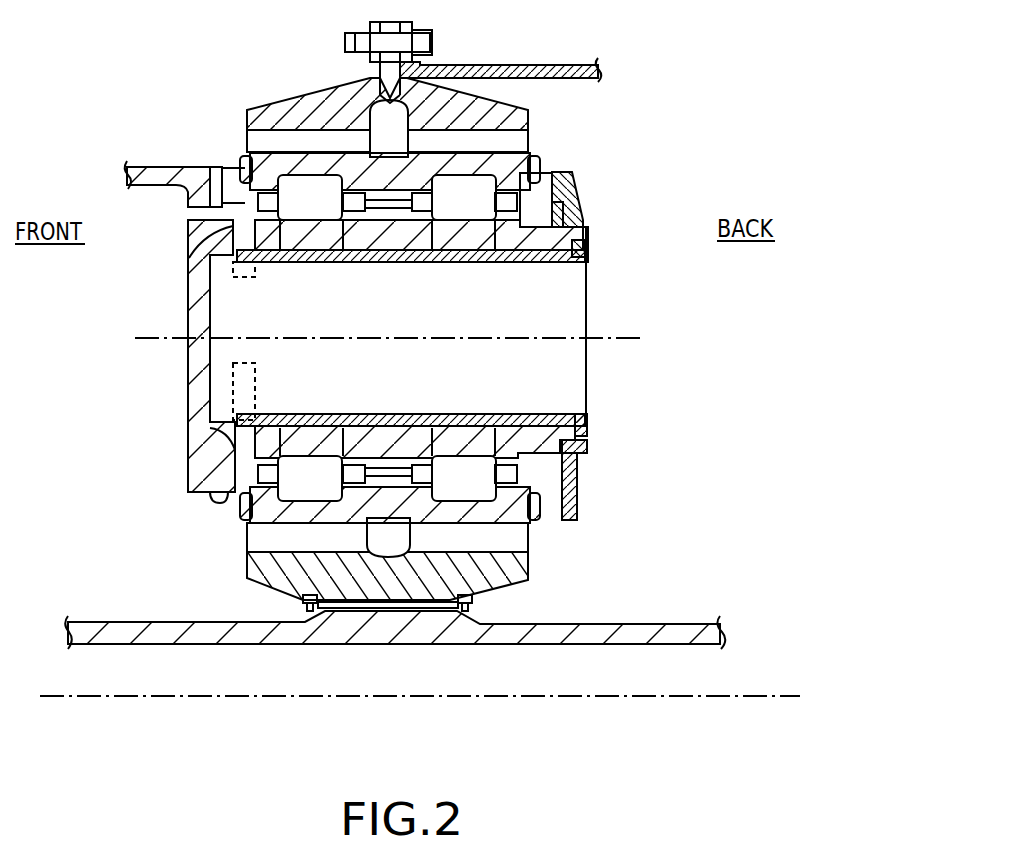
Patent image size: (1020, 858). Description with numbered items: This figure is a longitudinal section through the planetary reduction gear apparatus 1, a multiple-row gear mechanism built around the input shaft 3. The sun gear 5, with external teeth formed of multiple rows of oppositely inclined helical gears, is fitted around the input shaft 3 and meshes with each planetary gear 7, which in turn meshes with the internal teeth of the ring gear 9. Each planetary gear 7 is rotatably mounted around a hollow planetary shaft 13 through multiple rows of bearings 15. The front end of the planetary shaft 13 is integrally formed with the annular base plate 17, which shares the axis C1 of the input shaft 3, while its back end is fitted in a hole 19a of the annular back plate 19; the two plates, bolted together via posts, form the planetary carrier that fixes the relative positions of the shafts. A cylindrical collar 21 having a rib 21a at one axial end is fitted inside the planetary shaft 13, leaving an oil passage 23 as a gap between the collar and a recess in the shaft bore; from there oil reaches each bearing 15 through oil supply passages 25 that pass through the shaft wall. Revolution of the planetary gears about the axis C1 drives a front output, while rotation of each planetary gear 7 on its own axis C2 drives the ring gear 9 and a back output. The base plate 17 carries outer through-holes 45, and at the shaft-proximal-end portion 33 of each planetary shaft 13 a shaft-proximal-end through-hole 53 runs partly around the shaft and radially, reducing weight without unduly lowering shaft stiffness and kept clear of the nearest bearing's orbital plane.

The planetary reduction gear apparatus 1 is at (420, 359).
The input shaft 3 is at (682, 624).
The sun gear 5 is at (530, 582).
The planetary gear 7 is at (247, 165).
The ring gear 9 is at (533, 108).
The planetary shaft 13 is at (582, 228).
The bearing 15 is at (300, 190).
The base plate 17 is at (187, 298).
The back plate 19 is at (622, 342).
The hole 19a is at (587, 446).
The collar 21 is at (619, 331).
The rib 21a is at (590, 258).
The oil passage 23 is at (390, 263).
The oil supply passage 25 is at (287, 231).
The shaft-proximal-end portion 33 is at (225, 264).
The outer through-hole 45 is at (188, 216).
The shaft-proximal-end through-hole 53 is at (228, 232).
The axis C1 is at (710, 696).
The axis C2 is at (160, 343).